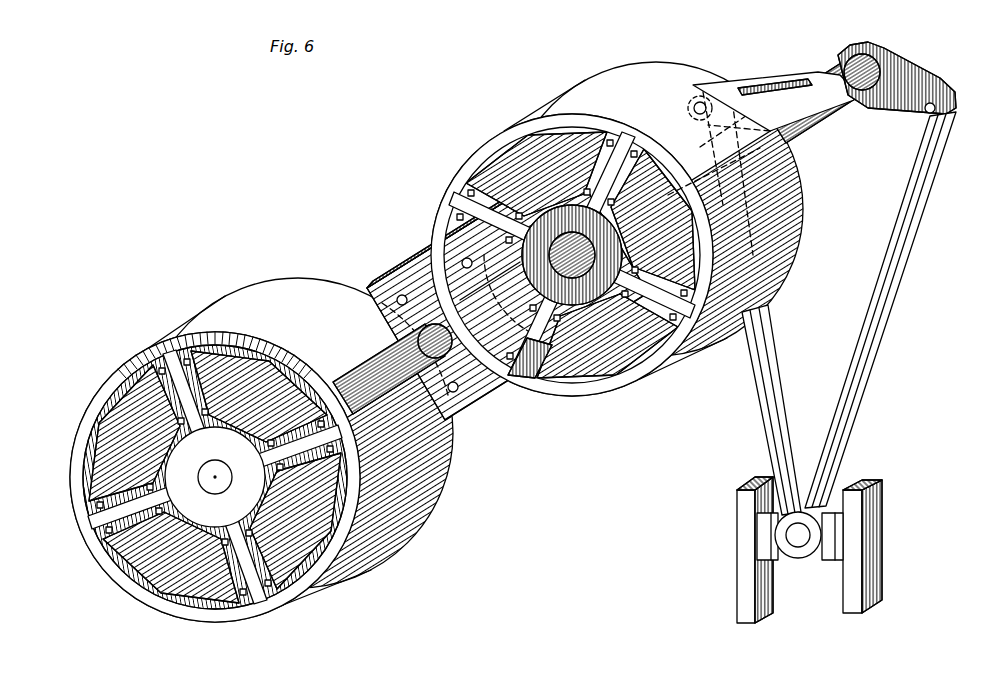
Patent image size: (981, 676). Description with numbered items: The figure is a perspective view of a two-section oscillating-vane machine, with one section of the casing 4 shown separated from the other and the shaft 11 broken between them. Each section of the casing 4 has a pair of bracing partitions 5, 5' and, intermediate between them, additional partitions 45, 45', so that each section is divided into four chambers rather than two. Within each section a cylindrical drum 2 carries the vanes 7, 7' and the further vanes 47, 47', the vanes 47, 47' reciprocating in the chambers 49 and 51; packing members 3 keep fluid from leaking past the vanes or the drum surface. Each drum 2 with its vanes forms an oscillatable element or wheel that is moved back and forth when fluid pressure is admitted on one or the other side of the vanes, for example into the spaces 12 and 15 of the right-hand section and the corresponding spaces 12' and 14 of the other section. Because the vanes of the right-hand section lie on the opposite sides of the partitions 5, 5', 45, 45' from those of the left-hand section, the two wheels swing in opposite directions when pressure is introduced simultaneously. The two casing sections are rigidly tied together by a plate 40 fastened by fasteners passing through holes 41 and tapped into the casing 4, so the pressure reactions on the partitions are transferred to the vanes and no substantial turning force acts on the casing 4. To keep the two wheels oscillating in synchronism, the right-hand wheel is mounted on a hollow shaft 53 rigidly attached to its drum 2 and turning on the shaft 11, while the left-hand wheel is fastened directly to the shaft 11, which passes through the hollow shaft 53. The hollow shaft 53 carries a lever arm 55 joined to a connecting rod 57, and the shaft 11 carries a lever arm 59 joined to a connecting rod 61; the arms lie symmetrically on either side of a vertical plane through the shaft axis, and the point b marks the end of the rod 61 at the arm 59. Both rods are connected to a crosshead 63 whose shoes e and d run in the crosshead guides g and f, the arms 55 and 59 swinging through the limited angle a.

The cylindrical drum 2 is at (490, 281).
The packing members 3 is at (167, 352).
The casing 4 is at (372, 545).
The bracing partition 5 is at (443, 280).
The bracing partition 5' is at (330, 458).
The vane 7 is at (428, 340).
The vane 7' is at (369, 442).
The shaft 11 is at (418, 338).
The chamber portion 12 is at (572, 208).
The chamber portion 12' is at (371, 369).
The chamber portion 14 is at (625, 385).
The chamber portion 15 is at (518, 385).
The plate 40 is at (385, 283).
The holes 41 is at (367, 292).
The additional partition 45 is at (280, 372).
The additional partition 45' is at (377, 482).
The vane 47 is at (310, 317).
The vane 47' is at (399, 485).
The chamber 49 is at (455, 262).
The chamber 51 is at (705, 222).
The hollow shaft 53 is at (770, 88).
The lever arm 55 is at (800, 80).
The connecting rod 57 is at (760, 347).
The lever arm 59 is at (905, 63).
The connecting rod 61 is at (875, 315).
The crosshead 63 is at (800, 547).
The angle a is at (705, 98).
The connecting rod end b is at (925, 112).
The shoe d is at (843, 535).
The shoe e is at (757, 535).
The crosshead guide f is at (868, 587).
The crosshead guide g is at (737, 595).